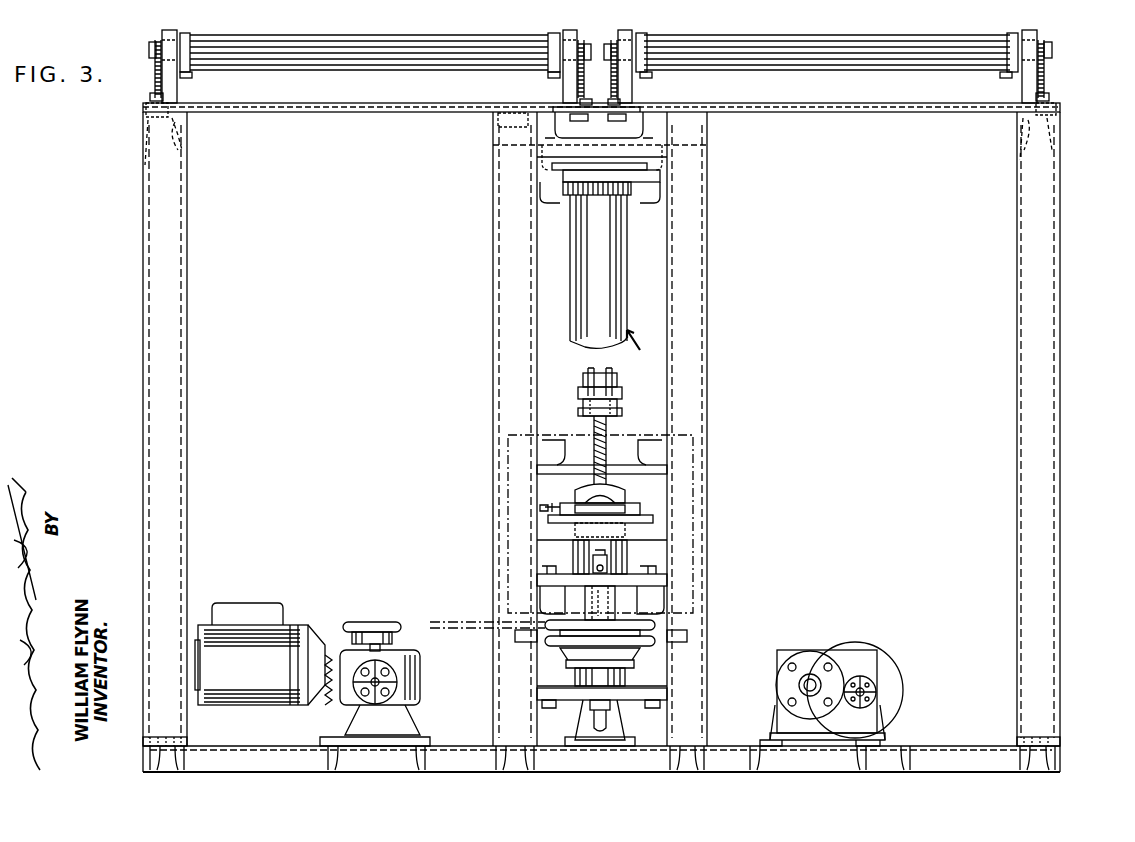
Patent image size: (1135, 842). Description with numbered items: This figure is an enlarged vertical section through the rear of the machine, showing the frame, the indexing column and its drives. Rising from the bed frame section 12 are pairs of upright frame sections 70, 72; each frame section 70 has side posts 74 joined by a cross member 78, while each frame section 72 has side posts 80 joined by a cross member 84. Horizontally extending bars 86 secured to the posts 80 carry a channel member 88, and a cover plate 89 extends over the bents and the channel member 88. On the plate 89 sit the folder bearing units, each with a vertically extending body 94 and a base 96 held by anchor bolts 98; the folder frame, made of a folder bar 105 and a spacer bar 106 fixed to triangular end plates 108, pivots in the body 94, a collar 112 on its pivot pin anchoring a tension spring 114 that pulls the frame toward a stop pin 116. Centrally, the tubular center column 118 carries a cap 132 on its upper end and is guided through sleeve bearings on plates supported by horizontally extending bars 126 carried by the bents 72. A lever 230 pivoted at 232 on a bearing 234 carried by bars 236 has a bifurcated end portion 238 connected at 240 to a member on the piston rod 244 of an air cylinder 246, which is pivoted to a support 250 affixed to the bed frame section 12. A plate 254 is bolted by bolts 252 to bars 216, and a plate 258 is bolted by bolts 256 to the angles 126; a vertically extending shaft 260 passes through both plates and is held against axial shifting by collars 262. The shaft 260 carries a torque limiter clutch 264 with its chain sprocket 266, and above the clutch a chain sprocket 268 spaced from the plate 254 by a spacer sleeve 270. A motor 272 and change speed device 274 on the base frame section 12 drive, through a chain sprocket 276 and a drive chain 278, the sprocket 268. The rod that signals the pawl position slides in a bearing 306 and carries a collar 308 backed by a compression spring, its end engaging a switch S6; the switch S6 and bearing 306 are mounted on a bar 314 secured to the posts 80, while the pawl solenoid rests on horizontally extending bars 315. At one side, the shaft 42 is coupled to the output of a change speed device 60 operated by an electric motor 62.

The bed frame section 12 is at (723, 744).
The shaft 42 is at (812, 676).
The change speed device 60 is at (796, 652).
The electric motor 62 is at (897, 685).
The frame section 70 is at (130, 361).
The frame section 72 is at (480, 358).
The side post 74 is at (155, 485).
The cross member 78 is at (188, 135).
The side post 80 is at (493, 325).
The cross member 84 is at (497, 144).
The horizontally extending bar 86 is at (552, 155).
The channel member 88 is at (630, 119).
The cover plate 89 is at (407, 103).
The bearing body 94 is at (164, 66).
The base 96 is at (170, 118).
The anchor bolt 98 is at (498, 125).
The folder bar 105 is at (312, 44).
The spacer bar 106 is at (305, 68).
The end plate 108 is at (188, 33).
The collar 112 is at (155, 40).
The tension spring 114 is at (158, 93).
The stop pin 116 is at (196, 77).
The center column 118 is at (644, 347).
The horizontally extending bar 126 is at (648, 668).
The cap 132 is at (652, 192).
The horizontally extending bar 216 is at (660, 599).
The lever 230 is at (594, 449).
The pivot 232 is at (620, 404).
The bearing 234 is at (620, 414).
The horizontally extending bar 236 is at (660, 444).
The end portion of lever 238 is at (580, 393).
The connection 240 is at (585, 376).
The piston rod 244 is at (598, 467).
The air cylinder 246 is at (573, 565).
The support 250 is at (590, 740).
The bolt 252 is at (655, 567).
The horizontally extending plate 254 is at (656, 581).
The bolt 256 is at (655, 704).
The horizontally extending plate 258 is at (660, 689).
The vertically extending shaft 260 is at (607, 555).
The collar 262 is at (627, 563).
The torque limiter clutch 264 is at (515, 690).
The chain sprocket 266 is at (655, 640).
The chain sprocket 268 is at (655, 624).
The spacer sleeve 270 is at (585, 600).
The motor 272 is at (272, 668).
The change speed device 274 is at (418, 673).
The chain sprocket 276 is at (353, 622).
The drive chain 278 is at (452, 630).
The bearing 306 is at (505, 492).
The switch S6 is at (508, 509).
The collar 308 is at (548, 518).
The horizontally extending bar 314 is at (550, 531).
The horizontally extending bar 315 is at (660, 483).